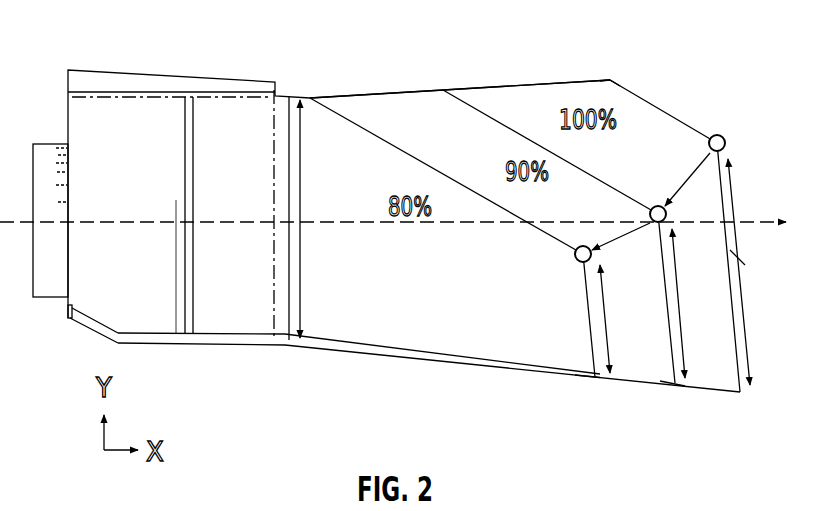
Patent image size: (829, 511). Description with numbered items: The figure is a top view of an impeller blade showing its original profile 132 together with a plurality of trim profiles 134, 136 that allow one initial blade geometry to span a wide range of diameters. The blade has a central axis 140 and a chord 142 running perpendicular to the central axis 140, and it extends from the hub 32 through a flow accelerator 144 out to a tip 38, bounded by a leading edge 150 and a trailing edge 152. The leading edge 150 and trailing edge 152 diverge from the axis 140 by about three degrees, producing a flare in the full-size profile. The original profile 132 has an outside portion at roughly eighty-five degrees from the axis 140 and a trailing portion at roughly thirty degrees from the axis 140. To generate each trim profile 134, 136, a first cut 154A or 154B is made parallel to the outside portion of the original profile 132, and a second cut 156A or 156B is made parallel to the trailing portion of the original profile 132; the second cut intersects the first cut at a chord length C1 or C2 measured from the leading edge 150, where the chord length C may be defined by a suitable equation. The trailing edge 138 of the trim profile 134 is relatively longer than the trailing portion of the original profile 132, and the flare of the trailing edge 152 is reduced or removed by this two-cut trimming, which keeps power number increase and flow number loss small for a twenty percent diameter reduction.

The hub 32 is at (58, 298).
The tip 38 is at (742, 395).
The original profile 132 is at (610, 80).
The trim profile 134 is at (443, 90).
The trim profile 136 is at (308, 96).
The trailing edge of trim profile 138 is at (665, 112).
The central axis 140 is at (748, 222).
The chord 142 is at (301, 280).
The flow accelerator 144 is at (158, 63).
The leading edge 150 is at (422, 357).
The trailing edge 152 is at (372, 94).
The first cut 154A is at (664, 364).
The first cut 154B is at (587, 358).
The second cut 156A is at (627, 196).
The second cut 156B is at (432, 168).
The chord length C is at (743, 292).
The chord length C1 is at (678, 282).
The chord length C2 is at (606, 315).